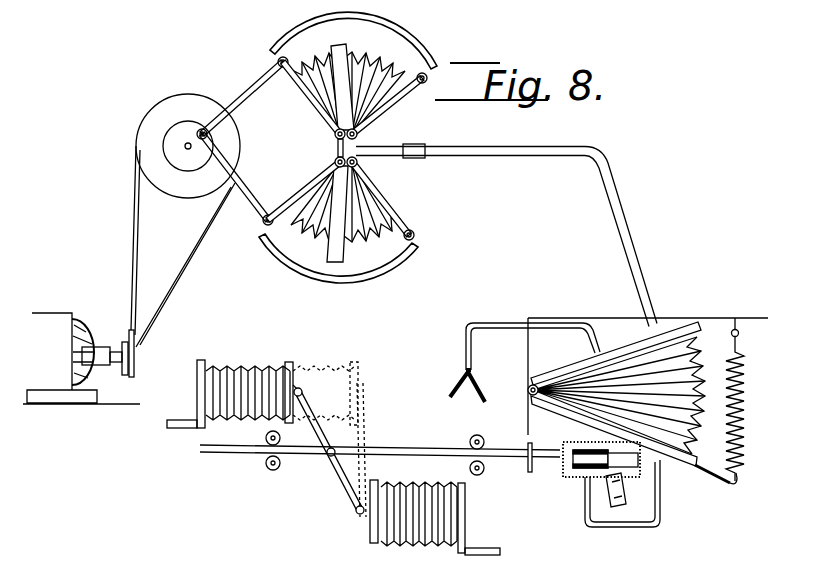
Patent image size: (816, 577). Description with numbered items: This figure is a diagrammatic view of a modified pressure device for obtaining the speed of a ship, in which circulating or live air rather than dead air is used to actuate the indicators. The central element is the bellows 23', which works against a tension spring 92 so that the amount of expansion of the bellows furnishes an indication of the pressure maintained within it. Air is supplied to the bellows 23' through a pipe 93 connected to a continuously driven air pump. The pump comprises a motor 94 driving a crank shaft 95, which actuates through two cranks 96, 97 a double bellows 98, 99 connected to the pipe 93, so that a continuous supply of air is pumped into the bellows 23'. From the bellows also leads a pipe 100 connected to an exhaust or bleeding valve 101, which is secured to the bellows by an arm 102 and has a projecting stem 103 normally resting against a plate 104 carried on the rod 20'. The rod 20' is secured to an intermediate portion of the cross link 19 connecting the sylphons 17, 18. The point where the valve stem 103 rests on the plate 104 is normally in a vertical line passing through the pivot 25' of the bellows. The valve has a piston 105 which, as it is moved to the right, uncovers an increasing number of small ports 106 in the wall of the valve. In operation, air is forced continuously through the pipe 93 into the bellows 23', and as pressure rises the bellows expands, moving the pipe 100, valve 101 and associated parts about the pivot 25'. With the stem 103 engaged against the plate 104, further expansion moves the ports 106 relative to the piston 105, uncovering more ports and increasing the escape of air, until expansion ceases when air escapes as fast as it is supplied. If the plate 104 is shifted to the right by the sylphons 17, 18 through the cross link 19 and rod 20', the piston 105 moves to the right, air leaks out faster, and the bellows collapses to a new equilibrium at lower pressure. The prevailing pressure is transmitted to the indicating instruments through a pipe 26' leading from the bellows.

The sylphon 17 is at (416, 538).
The sylphon 18 is at (238, 364).
The cross link 19 is at (334, 471).
The rod 20' is at (380, 449).
The bellows 23' is at (630, 388).
The pivot 25' is at (517, 377).
The pipe 26' is at (525, 346).
The tension spring 92 is at (740, 410).
The pipe 93 is at (622, 233).
The motor 94 is at (81, 358).
The crank shaft 95 is at (185, 220).
The crank 96 is at (251, 96).
The crank 97 is at (248, 180).
The double bellows 98 is at (383, 86).
The double bellows 99 is at (381, 194).
The pipe 100 is at (660, 501).
The exhaust valve 101 is at (577, 472).
The arm 102 is at (619, 500).
The stem 103 is at (572, 452).
The plate 104 is at (529, 448).
The piston 105 is at (567, 467).
The ports 106 is at (580, 450).